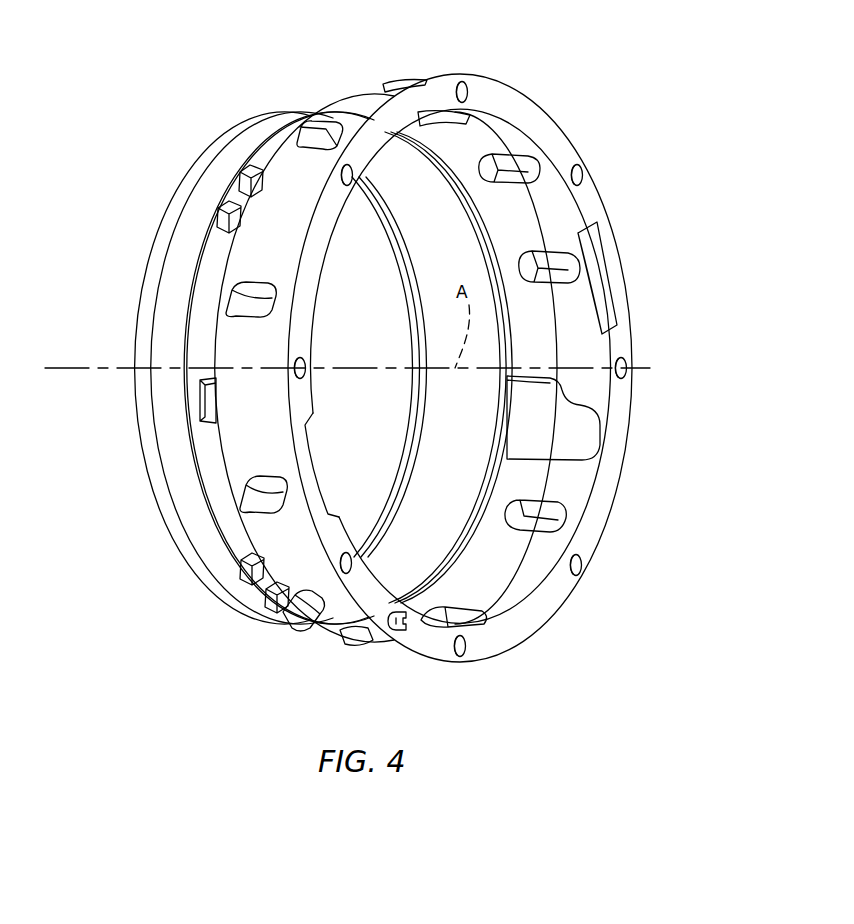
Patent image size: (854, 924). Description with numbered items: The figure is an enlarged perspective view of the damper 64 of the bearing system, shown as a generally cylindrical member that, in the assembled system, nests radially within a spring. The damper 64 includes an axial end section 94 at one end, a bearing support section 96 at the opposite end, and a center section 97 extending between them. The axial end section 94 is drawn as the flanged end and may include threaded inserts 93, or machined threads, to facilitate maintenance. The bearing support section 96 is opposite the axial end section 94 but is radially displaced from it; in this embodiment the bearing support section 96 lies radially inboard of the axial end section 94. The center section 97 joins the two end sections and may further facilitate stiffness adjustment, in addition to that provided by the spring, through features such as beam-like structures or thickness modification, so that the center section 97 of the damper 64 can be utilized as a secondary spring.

The damper 64 is at (640, 85).
The threaded inserts 93 is at (578, 568).
The axial end section 94 is at (540, 646).
The bearing support section 96 is at (266, 115).
The center section 97 is at (334, 104).